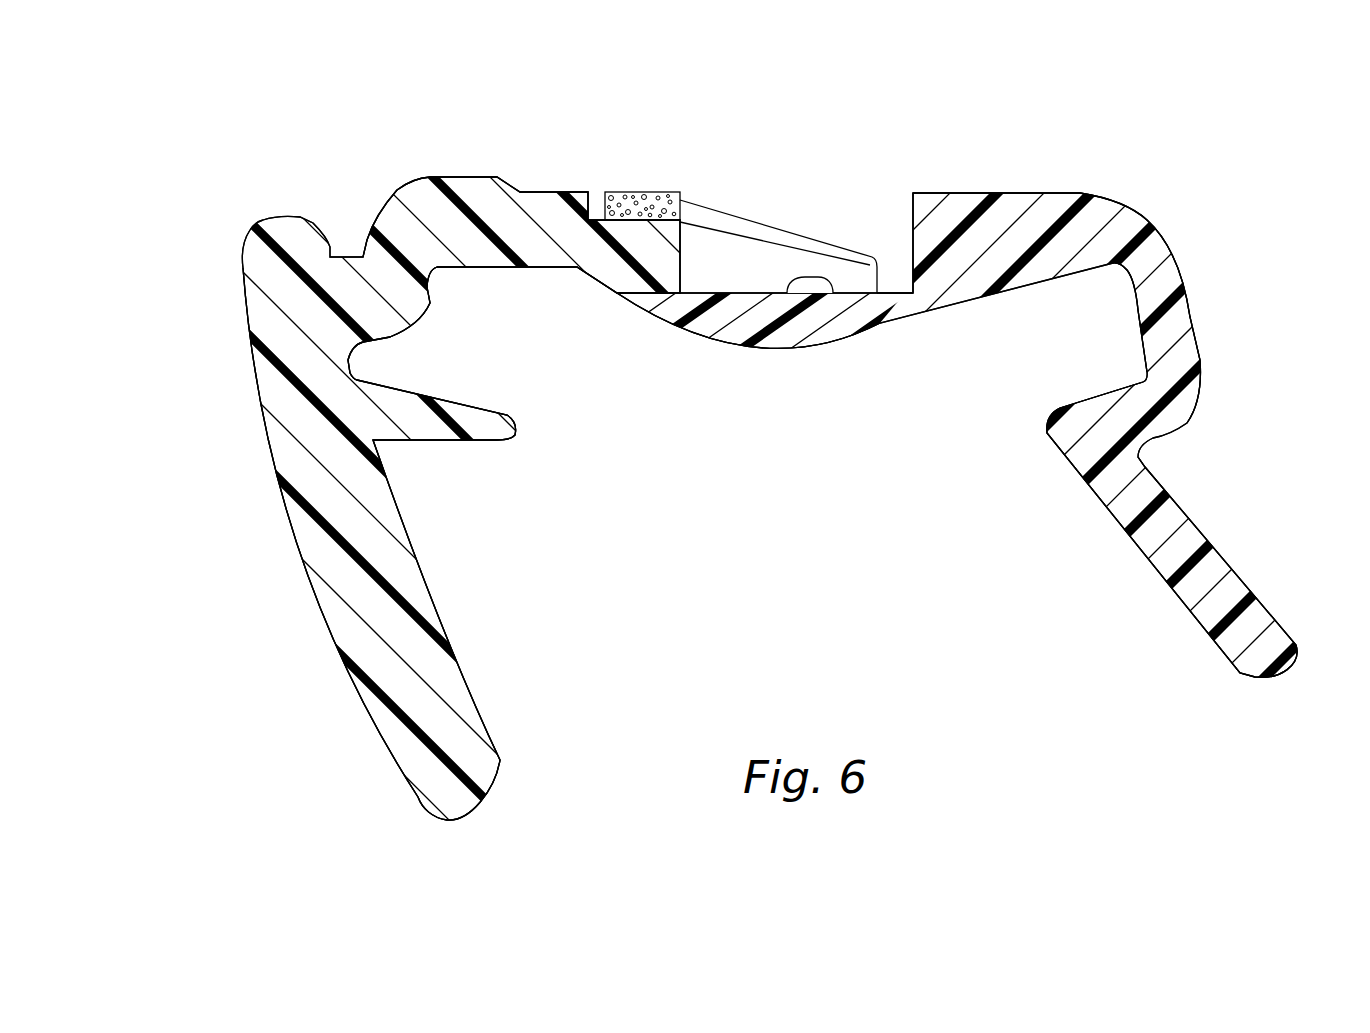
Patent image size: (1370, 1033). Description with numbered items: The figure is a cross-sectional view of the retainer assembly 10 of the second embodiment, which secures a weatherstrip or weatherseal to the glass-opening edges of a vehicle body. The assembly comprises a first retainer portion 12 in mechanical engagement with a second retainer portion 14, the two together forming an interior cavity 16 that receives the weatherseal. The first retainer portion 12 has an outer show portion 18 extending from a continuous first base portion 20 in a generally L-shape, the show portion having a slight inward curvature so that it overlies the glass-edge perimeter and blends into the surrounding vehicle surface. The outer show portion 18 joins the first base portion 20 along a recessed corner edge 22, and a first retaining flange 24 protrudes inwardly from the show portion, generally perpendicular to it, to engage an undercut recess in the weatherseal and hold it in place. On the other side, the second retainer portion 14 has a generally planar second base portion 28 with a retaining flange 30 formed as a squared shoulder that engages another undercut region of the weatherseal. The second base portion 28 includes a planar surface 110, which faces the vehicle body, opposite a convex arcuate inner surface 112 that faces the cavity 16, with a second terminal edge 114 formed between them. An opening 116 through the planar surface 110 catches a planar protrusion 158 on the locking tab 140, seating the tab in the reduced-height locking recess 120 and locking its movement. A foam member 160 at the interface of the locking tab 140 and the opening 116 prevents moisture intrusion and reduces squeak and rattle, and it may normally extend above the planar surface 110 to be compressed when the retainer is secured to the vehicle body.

The retainer assembly 10 is at (213, 155).
The first retainer portion 12 is at (258, 518).
The second retainer portion 14 is at (1230, 330).
The interior cavity 16 is at (853, 590).
The outer show portion 18 is at (331, 628).
The first base portion 20 is at (450, 177).
The recessed corner edge 22 is at (427, 307).
The first retaining flange 24 is at (496, 428).
The second base portion 28 is at (1148, 218).
The retaining flange 30 is at (1098, 397).
The planar surface 110 is at (1033, 193).
The arcuate inner surface 112 is at (717, 348).
The second terminal edge 114 is at (620, 297).
The opening 116 is at (912, 199).
The locking recess 120 is at (822, 291).
The locking tab 140 is at (768, 220).
The planar protrusion 158 is at (912, 235).
The foam member 160 is at (635, 197).